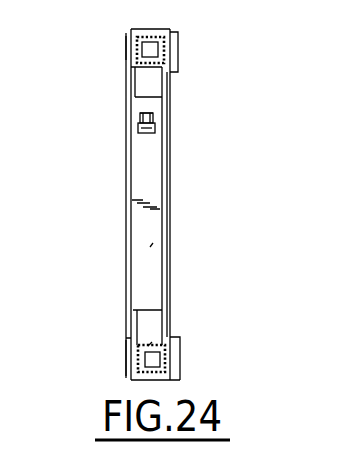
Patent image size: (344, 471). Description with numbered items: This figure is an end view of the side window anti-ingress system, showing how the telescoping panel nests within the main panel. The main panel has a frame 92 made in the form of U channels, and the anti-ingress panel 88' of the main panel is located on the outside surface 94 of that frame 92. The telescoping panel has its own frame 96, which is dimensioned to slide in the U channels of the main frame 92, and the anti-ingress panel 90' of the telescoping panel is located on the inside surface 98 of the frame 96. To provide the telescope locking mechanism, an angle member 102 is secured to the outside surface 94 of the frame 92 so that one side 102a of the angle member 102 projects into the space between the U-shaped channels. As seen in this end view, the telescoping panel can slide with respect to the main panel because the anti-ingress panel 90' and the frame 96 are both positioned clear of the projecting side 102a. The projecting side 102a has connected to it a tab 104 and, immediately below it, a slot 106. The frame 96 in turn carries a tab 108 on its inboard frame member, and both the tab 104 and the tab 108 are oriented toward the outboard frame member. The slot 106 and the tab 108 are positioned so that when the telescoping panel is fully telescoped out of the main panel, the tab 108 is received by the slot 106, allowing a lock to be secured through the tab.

The anti-ingress panel 88' is at (126, 204).
The anti-ingress panel 90' is at (191, 206).
The frame 92 is at (179, 348).
The outside surface 94 is at (130, 352).
The frame 96 is at (150, 343).
The inside surface 98 is at (165, 365).
The angle member 102 is at (132, 227).
The projecting side 102a is at (153, 243).
The tab 104 is at (153, 110).
The slot 106 is at (140, 124).
The tab 108 is at (155, 129).